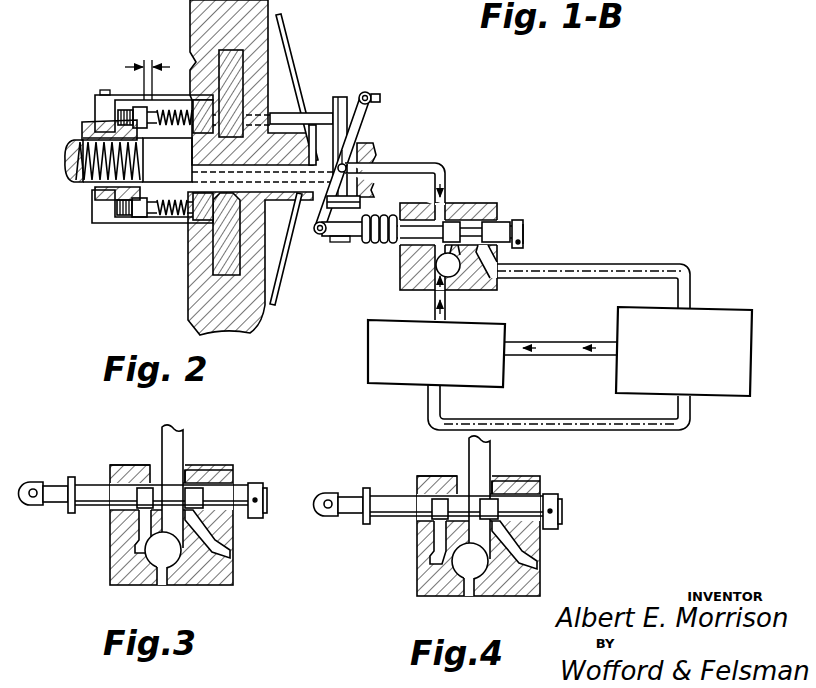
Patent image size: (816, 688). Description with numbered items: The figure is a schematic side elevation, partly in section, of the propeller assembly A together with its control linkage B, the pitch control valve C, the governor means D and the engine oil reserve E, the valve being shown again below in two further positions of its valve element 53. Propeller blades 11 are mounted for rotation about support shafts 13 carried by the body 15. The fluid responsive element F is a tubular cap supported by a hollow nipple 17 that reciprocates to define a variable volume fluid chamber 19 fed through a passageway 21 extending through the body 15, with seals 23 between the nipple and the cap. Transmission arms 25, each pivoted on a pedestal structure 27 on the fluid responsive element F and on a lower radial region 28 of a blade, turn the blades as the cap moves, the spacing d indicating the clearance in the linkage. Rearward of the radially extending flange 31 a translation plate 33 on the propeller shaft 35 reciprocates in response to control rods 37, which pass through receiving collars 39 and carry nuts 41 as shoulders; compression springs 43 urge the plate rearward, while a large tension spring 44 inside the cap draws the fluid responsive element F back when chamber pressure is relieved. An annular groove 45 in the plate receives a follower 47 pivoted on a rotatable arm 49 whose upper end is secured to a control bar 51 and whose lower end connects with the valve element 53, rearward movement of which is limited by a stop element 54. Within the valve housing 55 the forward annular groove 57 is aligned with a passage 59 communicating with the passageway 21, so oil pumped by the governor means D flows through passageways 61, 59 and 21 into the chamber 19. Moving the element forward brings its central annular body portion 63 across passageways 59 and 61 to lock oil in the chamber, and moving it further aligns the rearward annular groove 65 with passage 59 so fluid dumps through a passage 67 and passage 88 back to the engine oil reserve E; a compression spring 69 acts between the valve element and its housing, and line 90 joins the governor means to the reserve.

In FIG. 2, the propeller blades 11 is at (195, 68).
In FIG. 2, the support shafts 13 is at (237, 57).
In FIG. 2, the body 15 is at (292, 145).
In FIG. 2, the hollow nipple 17 is at (93, 195).
In FIG. 2, the fluid chamber 19 is at (150, 172).
In FIG. 2, the passageway 21 is at (290, 147).
In FIG. 2, the seals 23 is at (95, 133).
In FIG. 2, the transmission arms 25 is at (132, 95).
In FIG. 2, the pedestal structure 27 is at (100, 117).
In FIG. 2, the lower radial region 28 is at (203, 97).
In FIG. 2, the radially extending flange 31 is at (282, 20).
In FIG. 2, the translation plate 33 is at (357, 97).
In FIG. 2, the propeller shaft 35 is at (374, 153).
In FIG. 2, the control rods 37 is at (298, 222).
In FIG. 2, the receiving collar 39 is at (145, 218).
In FIG. 2, the nuts 41 is at (125, 220).
In FIG. 2, the compression springs 43 is at (170, 218).
In FIG. 2, the tension spring 44 is at (80, 134).
In FIG. 2, the annular groove 45 is at (345, 97).
In FIG. 2, the follower 47 is at (352, 140).
In FIG. 2, the rotatable arm 49 is at (345, 203).
In FIG. 2, the control bar 51 is at (381, 100).
In FIG. 2, the valve element 53 is at (352, 240).
In FIG. 3, the valve element 53 is at (98, 483).
In FIG. 4, the valve element 53 is at (395, 495).
In FIG. 2, the stop element 54 is at (400, 257).
In FIG. 2, the valve housing 55 is at (505, 223).
In FIG. 2, the forward annular groove 57 is at (450, 222).
In FIG. 3, the forward annular groove 57 is at (152, 488).
In FIG. 4, the forward annular groove 57 is at (440, 498).
In FIG. 2, the passage 59 is at (433, 217).
In FIG. 3, the passage 59 is at (181, 470).
In FIG. 4, the passage 59 is at (483, 478).
In FIG. 2, the passageway 61 is at (425, 278).
In FIG. 3, the passageway 61 is at (139, 538).
In FIG. 4, the passageway 61 is at (447, 553).
In FIG. 2, the central annular body portion 63 is at (468, 290).
In FIG. 3, the central annular body portion 63 is at (168, 483).
In FIG. 4, the central annular body portion 63 is at (463, 503).
In FIG. 2, the rearward annular groove 65 is at (490, 222).
In FIG. 3, the rearward annular groove 65 is at (193, 497).
In FIG. 4, the rearward annular groove 65 is at (493, 502).
In FIG. 2, the passage 67 is at (587, 264).
In FIG. 3, the passage 67 is at (233, 552).
In FIG. 4, the passage 67 is at (540, 567).
In FIG. 2, the compression spring 69 is at (387, 247).
In FIG. 2, the passage 88 is at (545, 420).
In FIG. 2, the oil line 90 is at (555, 345).
In FIG. 2, the propeller assembly A is at (163, 38).
In FIG. 2, the control linkage B is at (374, 136).
In FIG. 2, the pitch control valve C is at (482, 193).
In FIG. 2, the governor means D is at (366, 372).
In FIG. 2, the engine oil reserve E is at (758, 348).
In FIG. 2, the fluid responsive element F is at (62, 153).
In FIG. 2, the clearance distance d is at (144, 67).